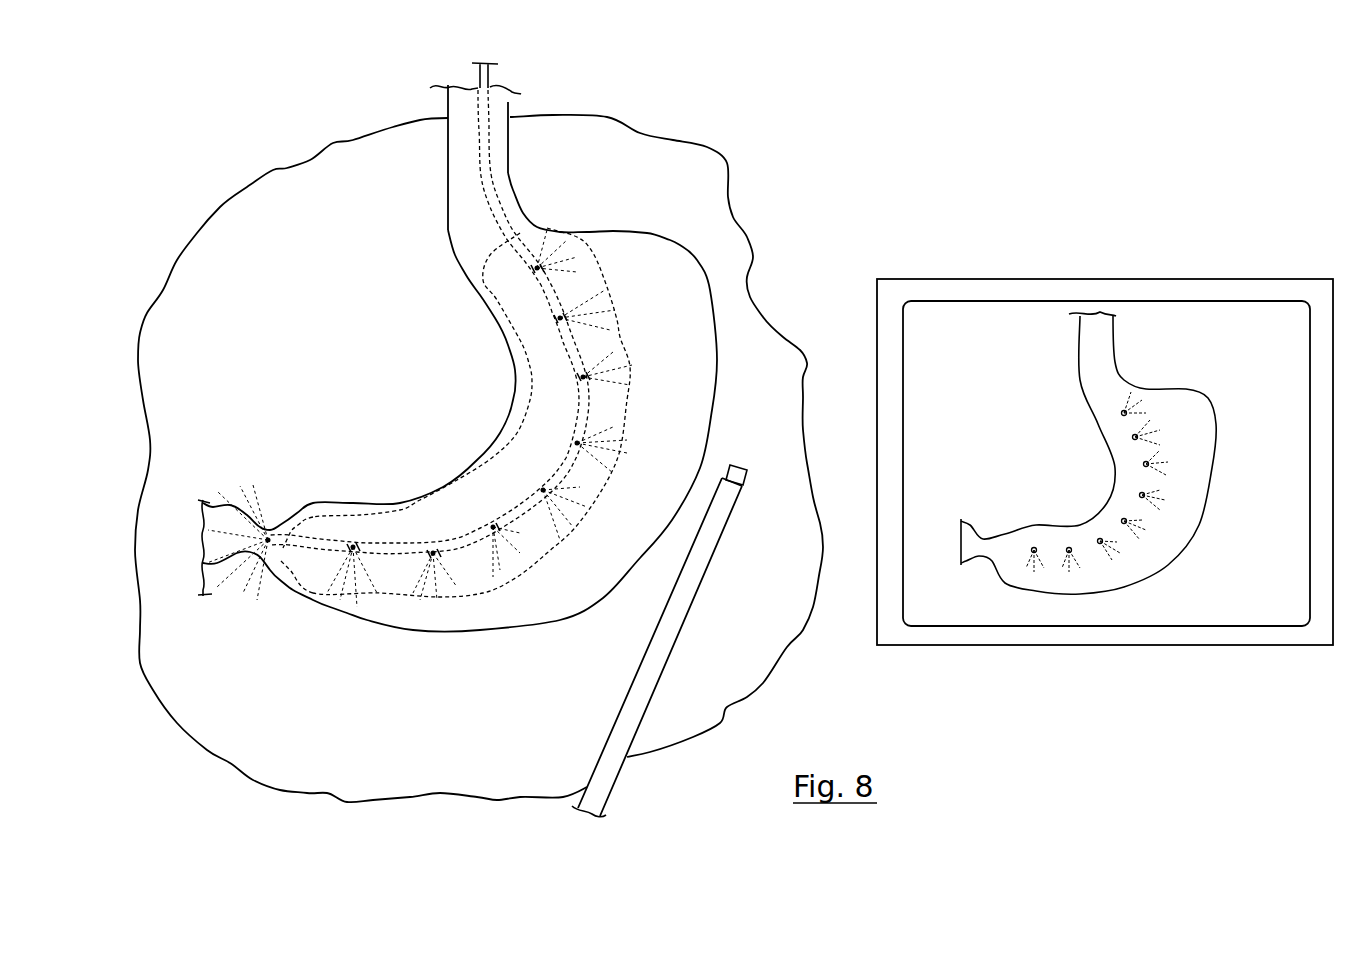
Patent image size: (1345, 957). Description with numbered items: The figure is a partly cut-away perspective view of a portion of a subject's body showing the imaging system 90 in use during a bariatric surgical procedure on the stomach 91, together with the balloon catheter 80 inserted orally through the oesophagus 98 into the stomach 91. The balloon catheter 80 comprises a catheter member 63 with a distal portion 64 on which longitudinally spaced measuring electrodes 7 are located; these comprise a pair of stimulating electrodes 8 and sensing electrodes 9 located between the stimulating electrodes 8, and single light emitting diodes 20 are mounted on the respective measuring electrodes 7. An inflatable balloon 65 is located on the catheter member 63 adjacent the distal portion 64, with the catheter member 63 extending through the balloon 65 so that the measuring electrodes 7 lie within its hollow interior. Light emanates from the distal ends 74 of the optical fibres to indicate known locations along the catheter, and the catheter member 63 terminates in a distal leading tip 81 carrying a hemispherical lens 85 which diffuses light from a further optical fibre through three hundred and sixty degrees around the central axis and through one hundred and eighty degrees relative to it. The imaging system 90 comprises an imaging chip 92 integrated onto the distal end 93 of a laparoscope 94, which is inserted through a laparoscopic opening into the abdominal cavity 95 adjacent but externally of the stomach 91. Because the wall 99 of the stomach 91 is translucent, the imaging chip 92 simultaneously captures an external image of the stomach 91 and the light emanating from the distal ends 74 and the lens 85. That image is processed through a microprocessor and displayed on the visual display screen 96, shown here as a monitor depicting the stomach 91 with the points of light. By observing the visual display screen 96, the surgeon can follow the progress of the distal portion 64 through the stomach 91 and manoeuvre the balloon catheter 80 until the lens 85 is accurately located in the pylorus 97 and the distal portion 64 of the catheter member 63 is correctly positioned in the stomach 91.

The measuring electrodes 7 is at (530, 273).
The stimulating electrodes 8 is at (530, 281).
The sensing electrodes 9 is at (563, 325).
The light emitting diodes 20 is at (588, 377).
The catheter member 63 is at (567, 410).
The distal portion 64 is at (543, 463).
The inflatable balloon 65 is at (580, 267).
The distal ends of the optical fibres 74 is at (533, 260).
The balloon catheter 80 is at (503, 72).
The distal leading tip 81 is at (277, 523).
The hemispherical lens 85 is at (263, 527).
The imaging system 90 is at (855, 232).
The stomach 91 is at (687, 293).
The imaging chip 92 is at (743, 473).
The distal end of the laparoscope 93 is at (727, 490).
The laparoscope 94 is at (650, 675).
The abdominal cavity 95 is at (287, 193).
The visual display screen 96 is at (1036, 650).
The pylorus 97 is at (255, 560).
The oesophagus 98 is at (507, 104).
The wall of the stomach 99 is at (690, 250).